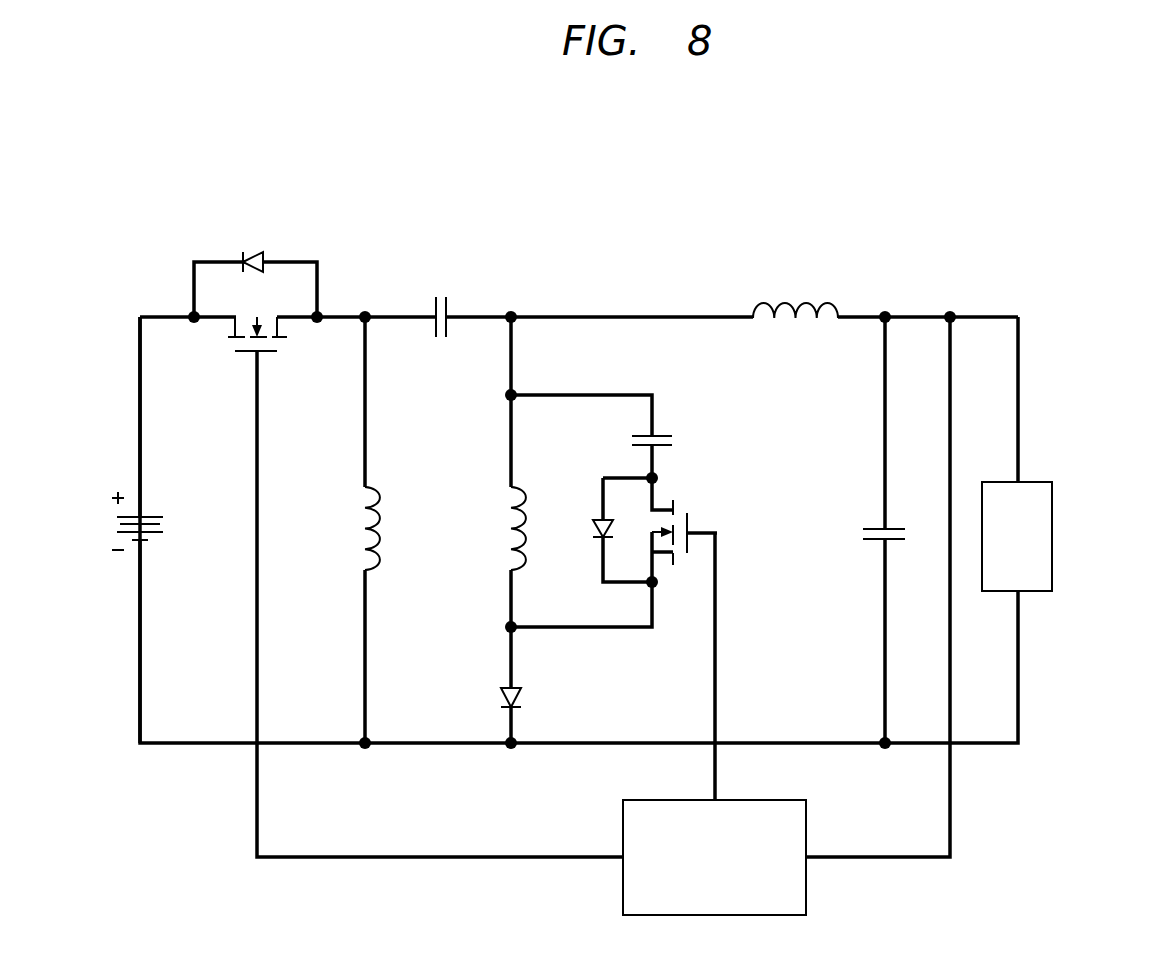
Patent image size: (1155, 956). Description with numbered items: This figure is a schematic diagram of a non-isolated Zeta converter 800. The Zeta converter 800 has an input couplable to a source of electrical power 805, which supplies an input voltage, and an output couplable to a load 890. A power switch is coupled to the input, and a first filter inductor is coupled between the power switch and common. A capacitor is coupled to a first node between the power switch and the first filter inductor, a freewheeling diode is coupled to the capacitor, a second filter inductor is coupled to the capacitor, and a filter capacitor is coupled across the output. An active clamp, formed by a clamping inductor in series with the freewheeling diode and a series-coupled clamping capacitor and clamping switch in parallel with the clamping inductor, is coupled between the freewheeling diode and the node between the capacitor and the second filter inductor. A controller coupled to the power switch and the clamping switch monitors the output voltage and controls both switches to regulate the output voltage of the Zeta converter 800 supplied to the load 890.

The non-isolated Zeta converter 800 is at (650, 220).
The source of electrical power 805 is at (165, 523).
The load 890 is at (1052, 538).